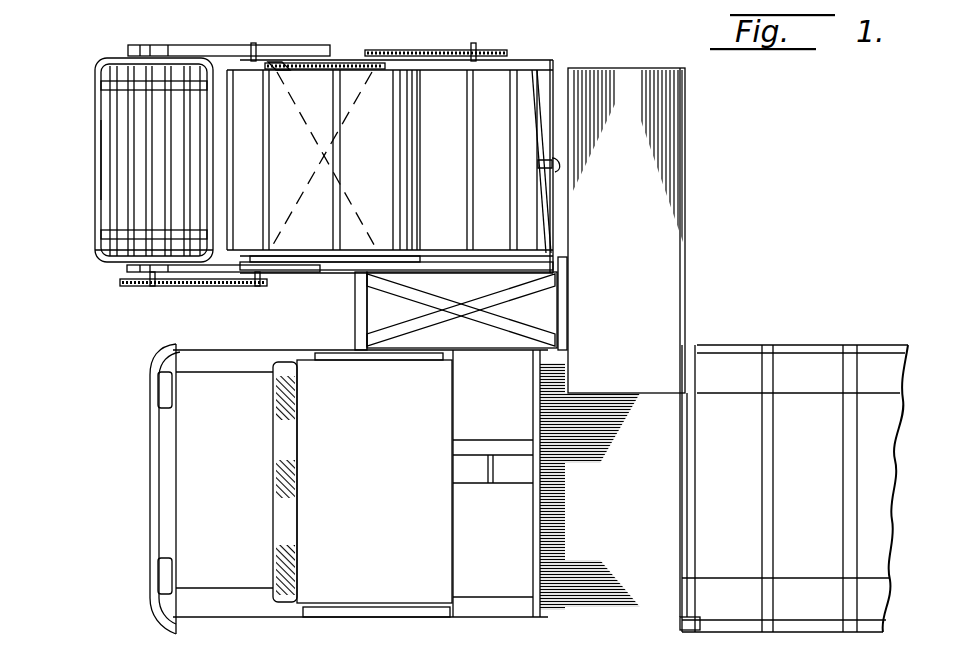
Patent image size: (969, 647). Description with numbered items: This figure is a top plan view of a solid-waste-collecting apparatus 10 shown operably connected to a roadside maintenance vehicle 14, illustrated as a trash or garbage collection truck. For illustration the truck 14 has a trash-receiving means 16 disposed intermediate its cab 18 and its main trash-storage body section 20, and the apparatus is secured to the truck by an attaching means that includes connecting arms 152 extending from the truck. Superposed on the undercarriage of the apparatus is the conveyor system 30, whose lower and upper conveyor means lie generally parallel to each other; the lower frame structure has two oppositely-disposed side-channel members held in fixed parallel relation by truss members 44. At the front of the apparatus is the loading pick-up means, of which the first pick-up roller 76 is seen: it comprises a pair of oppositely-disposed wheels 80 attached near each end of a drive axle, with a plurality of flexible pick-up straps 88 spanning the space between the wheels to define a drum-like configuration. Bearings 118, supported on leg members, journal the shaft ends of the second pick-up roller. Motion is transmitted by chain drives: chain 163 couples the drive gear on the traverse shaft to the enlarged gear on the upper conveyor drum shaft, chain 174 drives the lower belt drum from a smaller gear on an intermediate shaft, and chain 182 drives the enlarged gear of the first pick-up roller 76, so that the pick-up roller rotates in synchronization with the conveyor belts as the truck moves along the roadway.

The solid-waste-collecting apparatus 10 is at (186, 292).
The roadside maintenance vehicle 14 is at (136, 493).
The trash-receiving means 16 is at (650, 350).
The cab 18 is at (392, 509).
The main trash-storage body section 20 is at (820, 513).
The conveyor system 30 is at (424, 118).
The truss members 44 is at (454, 62).
The first pick-up roller 76 is at (82, 252).
The wheels 80 is at (112, 63).
The flexible pick-up straps 88 is at (122, 171).
The bearings 118 is at (154, 45).
The connecting arms 152 is at (360, 310).
The chain 163 is at (301, 63).
The chain 174 is at (408, 50).
The chain 182 is at (176, 287).